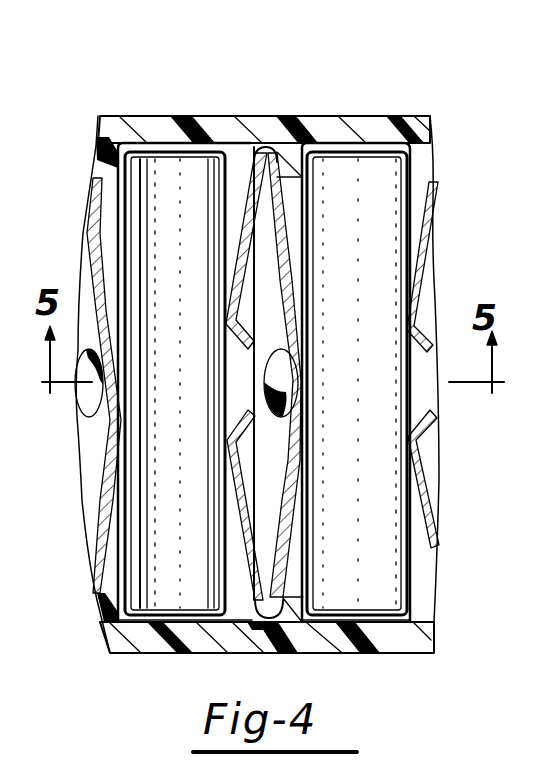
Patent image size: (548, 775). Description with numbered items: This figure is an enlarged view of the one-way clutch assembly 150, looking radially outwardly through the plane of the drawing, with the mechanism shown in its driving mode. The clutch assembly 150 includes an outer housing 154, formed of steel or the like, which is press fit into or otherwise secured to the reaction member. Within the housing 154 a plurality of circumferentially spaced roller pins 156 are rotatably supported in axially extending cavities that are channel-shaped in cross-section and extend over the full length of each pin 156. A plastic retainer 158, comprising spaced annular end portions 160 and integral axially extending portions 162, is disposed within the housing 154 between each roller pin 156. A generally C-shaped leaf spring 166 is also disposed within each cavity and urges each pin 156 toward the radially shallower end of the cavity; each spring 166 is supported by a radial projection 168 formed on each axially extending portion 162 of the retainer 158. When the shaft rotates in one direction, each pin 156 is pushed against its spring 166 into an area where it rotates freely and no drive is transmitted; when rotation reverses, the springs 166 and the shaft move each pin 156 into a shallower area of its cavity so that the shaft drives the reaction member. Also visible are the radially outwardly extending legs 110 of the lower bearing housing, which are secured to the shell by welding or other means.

The one-way clutch assembly 150 is at (245, 87).
The plastic retainer 158 is at (330, 128).
The annular end portion 160 is at (423, 127).
The roller pin 156 is at (386, 190).
The axially extending portion 162 is at (100, 187).
The radial projection 168 is at (285, 377).
The C-shaped leaf spring 166 is at (291, 478).
The outer housing 154 is at (422, 565).
The leg 110 is at (420, 640).